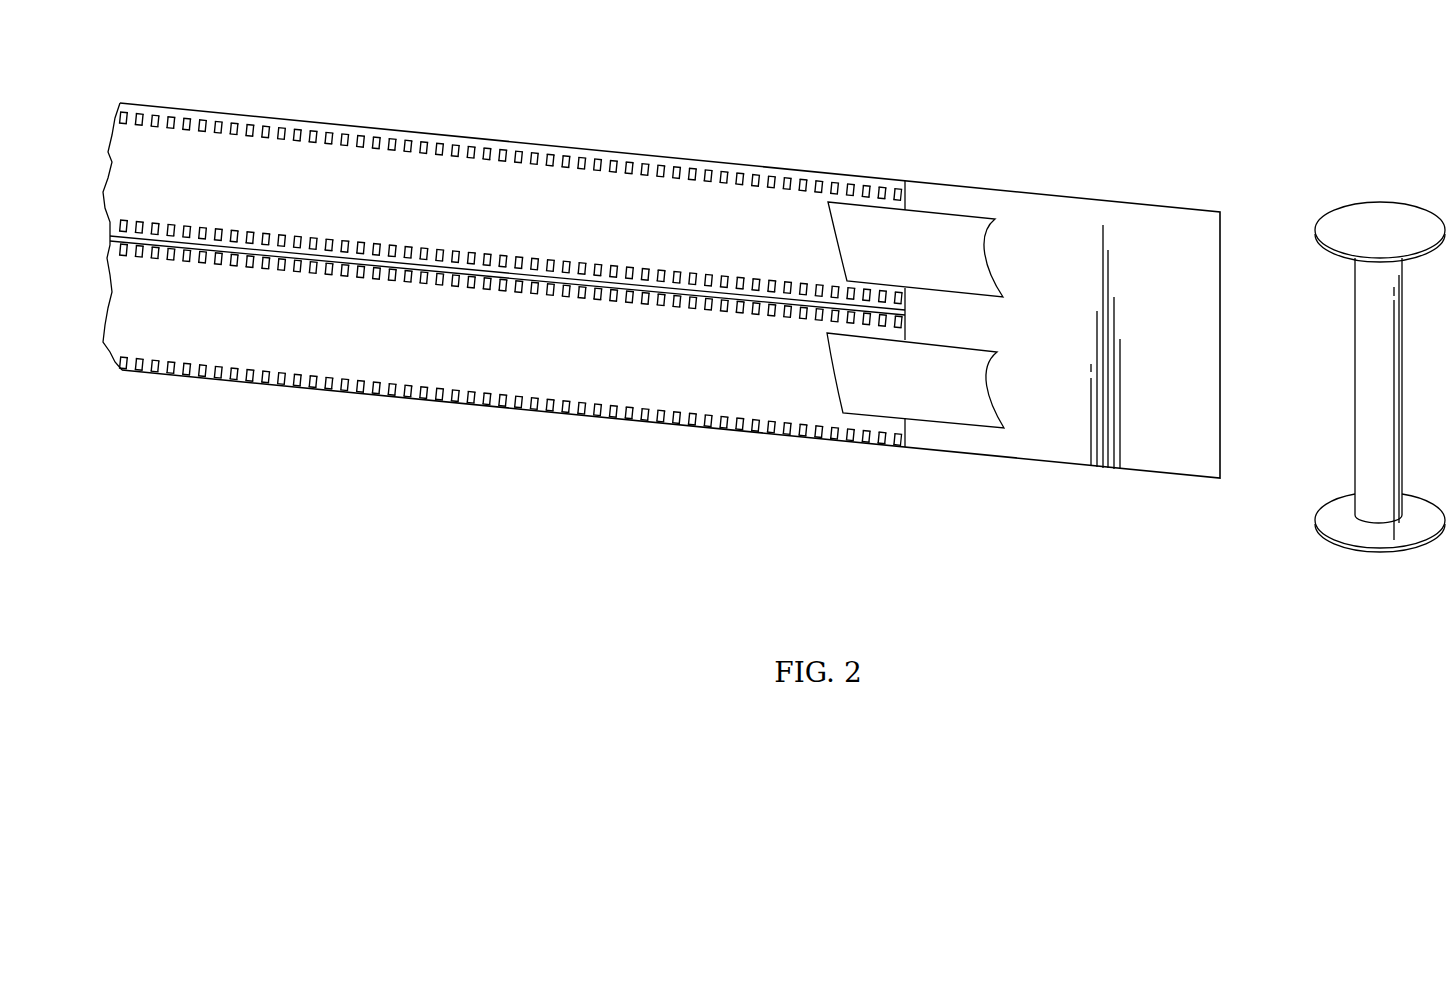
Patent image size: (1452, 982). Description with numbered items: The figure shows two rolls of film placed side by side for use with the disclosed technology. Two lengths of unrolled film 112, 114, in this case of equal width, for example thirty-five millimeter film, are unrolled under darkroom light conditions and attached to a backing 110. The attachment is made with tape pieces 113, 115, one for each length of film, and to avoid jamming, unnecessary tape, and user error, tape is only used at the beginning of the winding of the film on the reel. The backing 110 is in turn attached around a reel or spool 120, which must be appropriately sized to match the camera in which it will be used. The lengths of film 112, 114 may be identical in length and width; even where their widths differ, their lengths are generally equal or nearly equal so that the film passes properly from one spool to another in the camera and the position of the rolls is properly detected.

The backing 110 is at (1050, 213).
The length of unrolled film 112 is at (449, 178).
The tape piece 113 is at (943, 213).
The length of unrolled film 114 is at (449, 357).
The tape piece 115 is at (943, 403).
The reel or spool 120 is at (1379, 215).